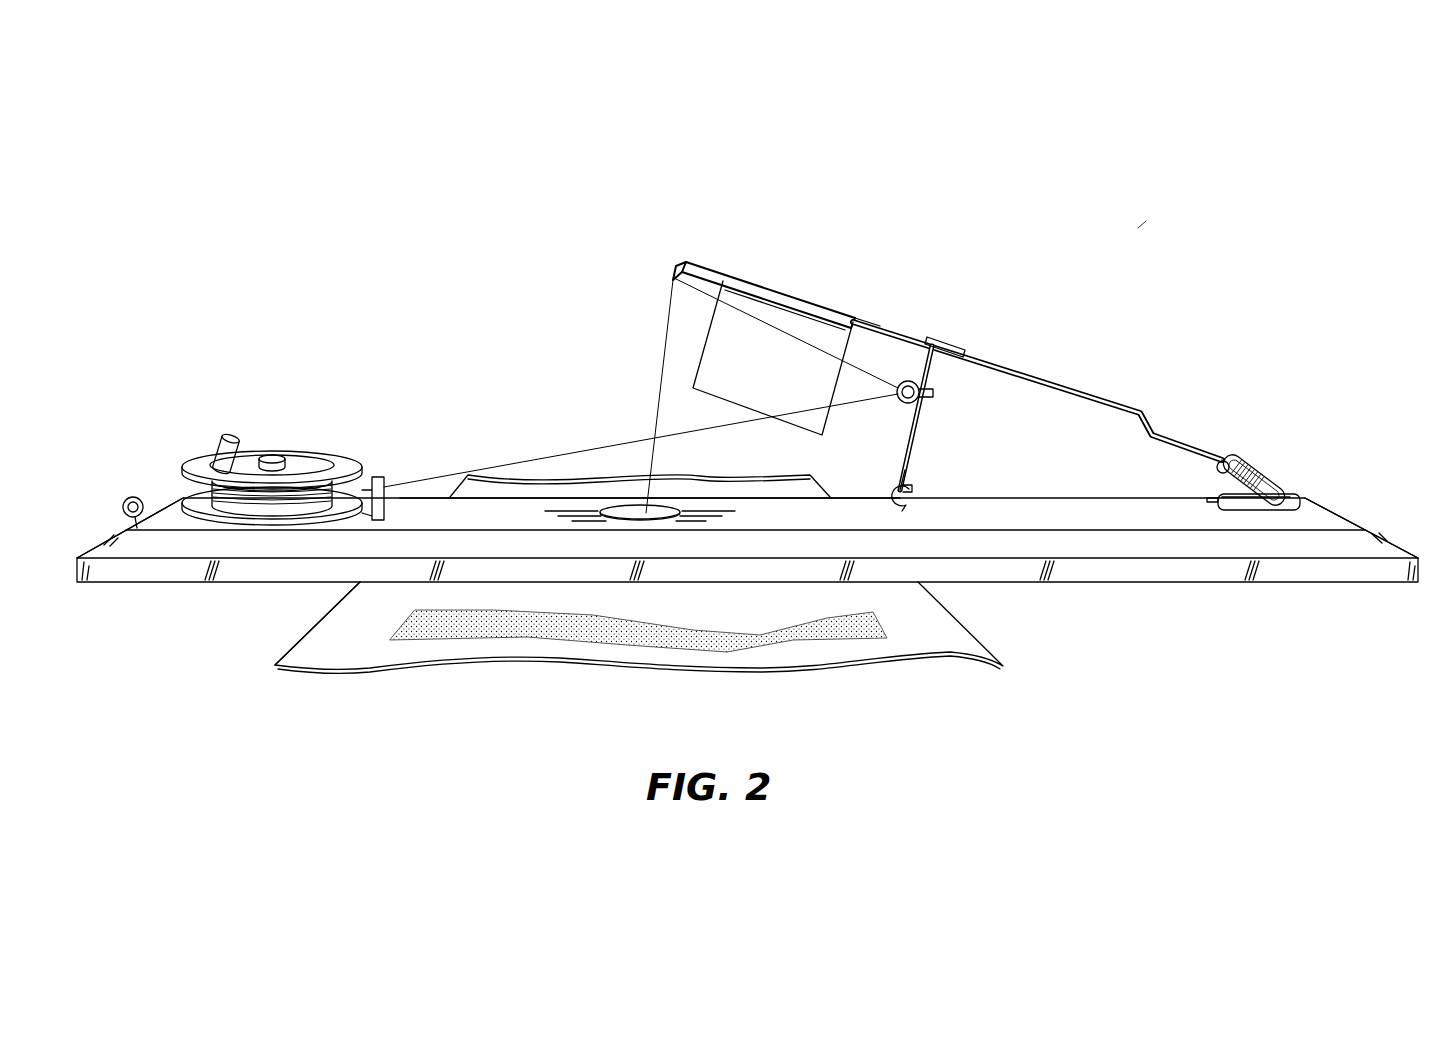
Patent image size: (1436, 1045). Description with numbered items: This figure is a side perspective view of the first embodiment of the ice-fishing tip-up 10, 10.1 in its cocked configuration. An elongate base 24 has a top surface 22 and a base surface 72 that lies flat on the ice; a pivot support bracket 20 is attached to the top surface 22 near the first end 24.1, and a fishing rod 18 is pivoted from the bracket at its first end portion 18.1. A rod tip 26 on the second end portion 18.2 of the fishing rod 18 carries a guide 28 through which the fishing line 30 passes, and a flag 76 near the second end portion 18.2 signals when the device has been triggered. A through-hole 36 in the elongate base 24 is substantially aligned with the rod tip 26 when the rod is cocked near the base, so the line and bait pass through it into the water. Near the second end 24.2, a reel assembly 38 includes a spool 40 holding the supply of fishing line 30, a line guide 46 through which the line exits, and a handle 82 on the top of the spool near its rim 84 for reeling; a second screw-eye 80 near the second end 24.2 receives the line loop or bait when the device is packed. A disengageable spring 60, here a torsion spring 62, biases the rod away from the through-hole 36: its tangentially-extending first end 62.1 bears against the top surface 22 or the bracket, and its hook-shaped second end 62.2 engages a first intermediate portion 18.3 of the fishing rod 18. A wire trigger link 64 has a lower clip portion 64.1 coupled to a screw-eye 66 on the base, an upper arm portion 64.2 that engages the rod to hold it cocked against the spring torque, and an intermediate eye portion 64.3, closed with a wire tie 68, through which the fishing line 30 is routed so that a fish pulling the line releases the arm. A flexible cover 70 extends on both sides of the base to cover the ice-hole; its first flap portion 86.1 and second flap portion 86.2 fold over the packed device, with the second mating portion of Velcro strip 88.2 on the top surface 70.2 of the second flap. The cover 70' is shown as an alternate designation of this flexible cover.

The ice-fishing tip-up 10 is at (1179, 186).
The first aspect of the ice-fishing tip-up 10.1 is at (1143, 223).
The fishing rod 18 is at (992, 350).
The first end portion of the fishing rod 18.1 is at (1258, 449).
The second end portion of the fishing rod 18.2 is at (905, 315).
The first intermediate portion of the fishing rod 18.3 is at (1017, 387).
The pivot support bracket 20 is at (1220, 504).
The top surface 22 is at (1012, 523).
The elongate base 24 is at (752, 569).
The first end of the elongate base 24.1 is at (1364, 518).
The second end of the elongate base 24.2 is at (130, 590).
The rod tip 26 is at (717, 258).
The guide 28 is at (673, 270).
The fishing line 30 is at (668, 313).
The through-hole 36 is at (688, 503).
The reel assembly 38 is at (269, 433).
The spool 40 is at (283, 443).
The line guide 46 is at (378, 476).
The disengageable spring 60 is at (1285, 438).
The torsion spring 62 is at (1252, 476).
The first end of the torsion spring 62.1 is at (1213, 497).
The second end of the torsion spring 62.2 is at (1220, 458).
The trigger link 64 is at (918, 440).
The clip portion of the trigger link 64.1 is at (902, 488).
The arm portion of the trigger link 64.2 is at (965, 345).
The intermediate eye portion of the trigger link 64.3 is at (876, 328).
The screw-eye 66 is at (915, 492).
The wire tie 68 is at (935, 395).
The flexible cover 70 is at (642, 651).
The alternate sheet 70' is at (643, 686).
The top surface of the flexible cover 70.2 is at (918, 613).
The base surface 72 is at (1150, 583).
The flag 76 is at (711, 329).
The second screw-eye 80 is at (130, 496).
The handle 82 is at (215, 443).
The rim 84 is at (272, 498).
The first flap portion 86.1 is at (672, 466).
The second flap portion 86.2 is at (395, 613).
The second mating portion of Velcro strip 88.2 is at (523, 633).